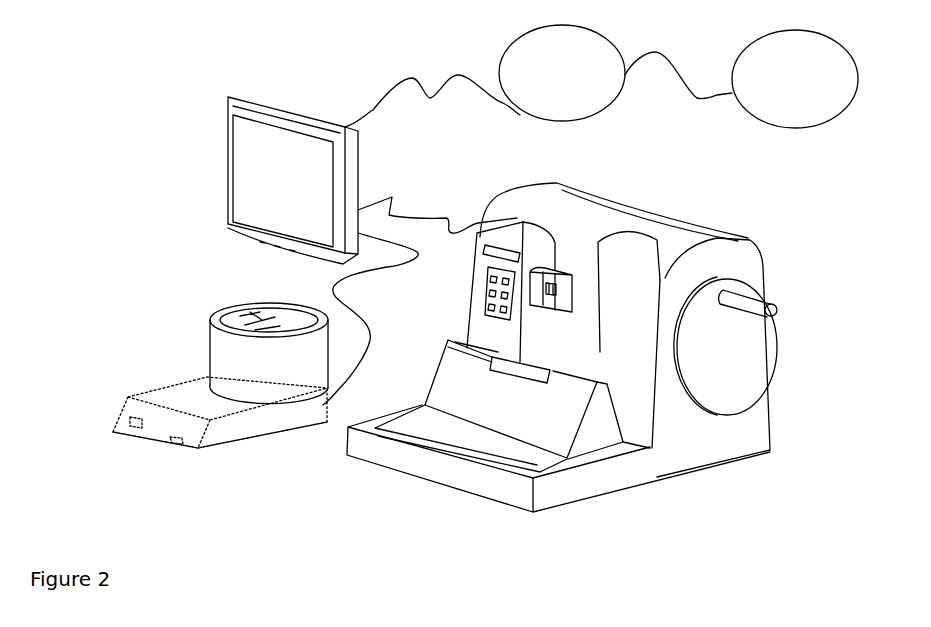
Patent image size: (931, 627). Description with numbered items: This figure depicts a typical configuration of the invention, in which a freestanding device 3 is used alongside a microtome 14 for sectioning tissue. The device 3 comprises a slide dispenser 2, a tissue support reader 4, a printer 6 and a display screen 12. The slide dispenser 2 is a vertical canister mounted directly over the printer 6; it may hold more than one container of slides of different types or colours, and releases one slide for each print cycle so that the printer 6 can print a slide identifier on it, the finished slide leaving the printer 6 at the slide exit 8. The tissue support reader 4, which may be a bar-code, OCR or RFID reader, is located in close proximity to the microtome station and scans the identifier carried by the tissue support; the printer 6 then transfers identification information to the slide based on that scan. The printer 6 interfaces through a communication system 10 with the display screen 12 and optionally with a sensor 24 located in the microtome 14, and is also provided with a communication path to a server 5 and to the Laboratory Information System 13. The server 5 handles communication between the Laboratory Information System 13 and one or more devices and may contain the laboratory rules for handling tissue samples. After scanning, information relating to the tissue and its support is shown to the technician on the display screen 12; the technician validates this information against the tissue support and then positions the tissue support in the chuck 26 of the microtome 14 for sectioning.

The slide dispenser 2 is at (245, 307).
The device 3 is at (220, 402).
The tissue support reader 4 is at (132, 420).
The server 5 is at (562, 73).
The printer 6 is at (284, 430).
The slide exit 8 is at (188, 447).
The communication system 10 is at (383, 232).
The display screen 12 is at (230, 177).
The Laboratory Information System 13 is at (473, 147).
The microtome 14 is at (778, 393).
The sensor 24 is at (577, 270).
The chuck 26 is at (562, 292).